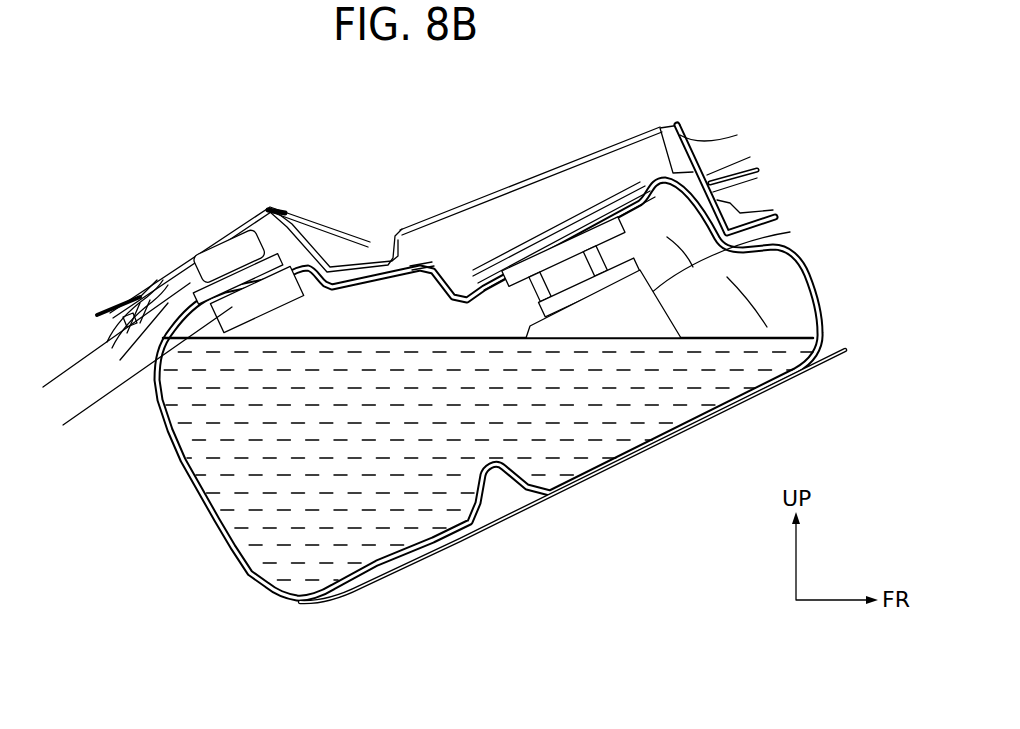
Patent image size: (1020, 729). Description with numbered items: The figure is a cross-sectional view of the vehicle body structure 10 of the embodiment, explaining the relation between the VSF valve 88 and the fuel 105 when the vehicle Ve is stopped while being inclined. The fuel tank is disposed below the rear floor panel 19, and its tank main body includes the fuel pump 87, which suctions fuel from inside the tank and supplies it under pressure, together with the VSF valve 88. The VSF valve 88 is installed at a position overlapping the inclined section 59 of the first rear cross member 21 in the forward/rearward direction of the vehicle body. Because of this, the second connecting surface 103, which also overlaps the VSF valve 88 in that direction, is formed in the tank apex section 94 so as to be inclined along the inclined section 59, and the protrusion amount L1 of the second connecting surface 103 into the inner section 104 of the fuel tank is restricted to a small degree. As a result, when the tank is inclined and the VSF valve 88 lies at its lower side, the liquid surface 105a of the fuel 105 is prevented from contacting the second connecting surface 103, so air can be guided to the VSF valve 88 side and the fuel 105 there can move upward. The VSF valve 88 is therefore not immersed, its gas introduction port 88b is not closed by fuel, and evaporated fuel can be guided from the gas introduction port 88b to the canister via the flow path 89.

The vehicle body structure 10 is at (166, 222).
The rear floor panel 19 is at (562, 166).
The first rear cross member 21 is at (326, 240).
The inclined section 59 is at (370, 257).
The fuel pump 87 is at (647, 297).
The VSF valve 88 is at (220, 270).
The gas introduction port 88b is at (283, 327).
The flow path 89 is at (173, 310).
The tank apex section 94 is at (473, 283).
The second connecting surface 103 is at (415, 252).
The inner section 104 is at (442, 465).
The fuel 105 is at (757, 343).
The liquid surface 105a is at (640, 336).
The vehicle Ve is at (211, 164).
The protrusion amount L1 is at (67, 376).